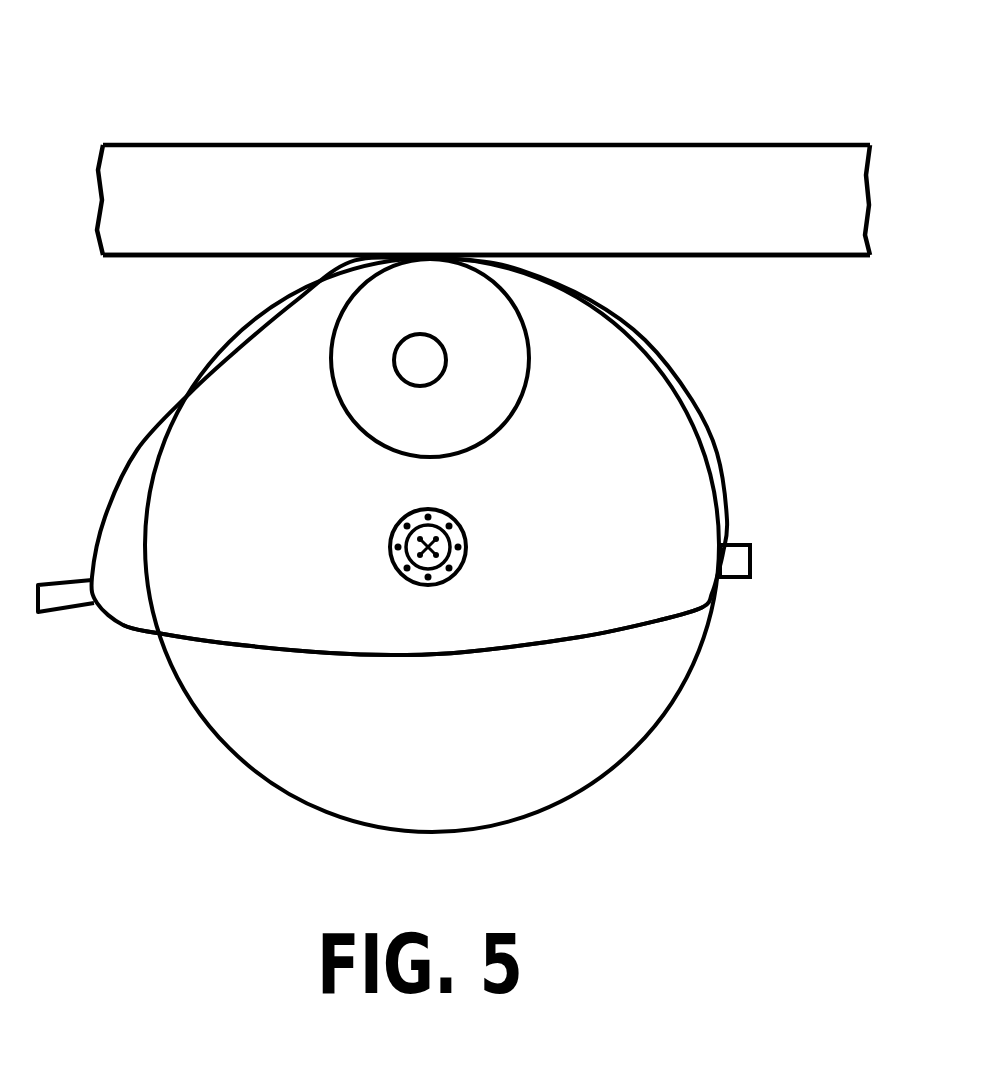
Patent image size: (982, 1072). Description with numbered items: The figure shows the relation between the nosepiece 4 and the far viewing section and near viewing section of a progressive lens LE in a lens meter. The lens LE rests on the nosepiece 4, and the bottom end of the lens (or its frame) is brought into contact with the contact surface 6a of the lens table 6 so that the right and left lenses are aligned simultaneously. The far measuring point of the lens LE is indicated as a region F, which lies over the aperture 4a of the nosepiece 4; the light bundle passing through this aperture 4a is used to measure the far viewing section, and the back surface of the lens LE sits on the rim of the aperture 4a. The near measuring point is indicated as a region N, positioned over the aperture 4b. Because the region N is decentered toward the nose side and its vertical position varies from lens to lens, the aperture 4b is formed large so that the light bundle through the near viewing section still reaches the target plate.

The lens table 6 is at (289, 160).
The contact surface 6a is at (788, 256).
The nosepiece 4 is at (660, 712).
The aperture 4a is at (390, 547).
The aperture 4b is at (340, 407).
The region N is at (446, 358).
The region F is at (467, 543).
The lens LE is at (465, 653).